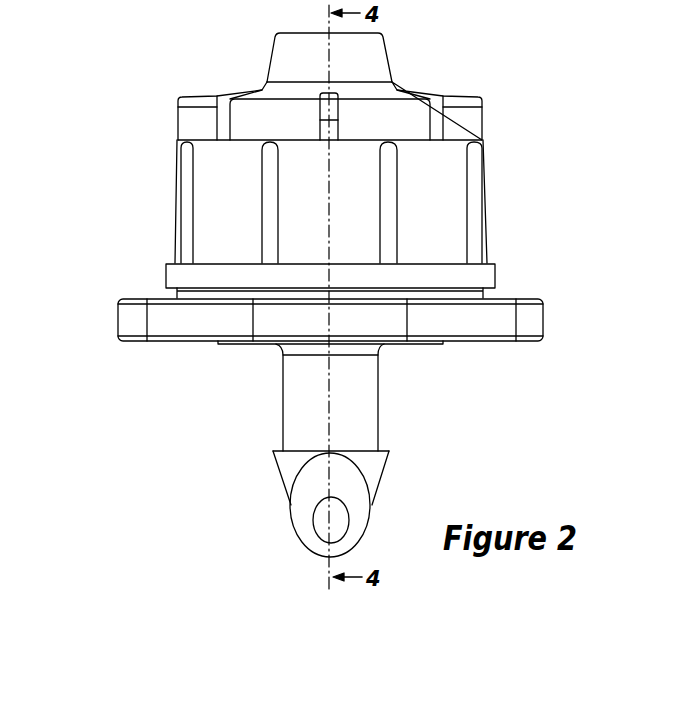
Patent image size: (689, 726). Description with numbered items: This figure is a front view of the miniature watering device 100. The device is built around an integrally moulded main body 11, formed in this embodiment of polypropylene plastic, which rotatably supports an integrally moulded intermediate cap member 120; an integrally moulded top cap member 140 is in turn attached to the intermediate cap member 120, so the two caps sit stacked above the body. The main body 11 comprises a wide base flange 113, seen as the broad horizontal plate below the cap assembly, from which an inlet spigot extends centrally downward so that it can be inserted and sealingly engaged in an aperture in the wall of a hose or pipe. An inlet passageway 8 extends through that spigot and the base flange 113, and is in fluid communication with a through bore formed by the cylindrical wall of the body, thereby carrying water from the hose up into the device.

The miniature watering device 100 is at (447, 72).
The top cap member 140 is at (209, 86).
The intermediate cap member 120 is at (490, 183).
The base flange 113 is at (527, 298).
The main body 11 is at (114, 318).
The inlet passageway 8 is at (322, 520).